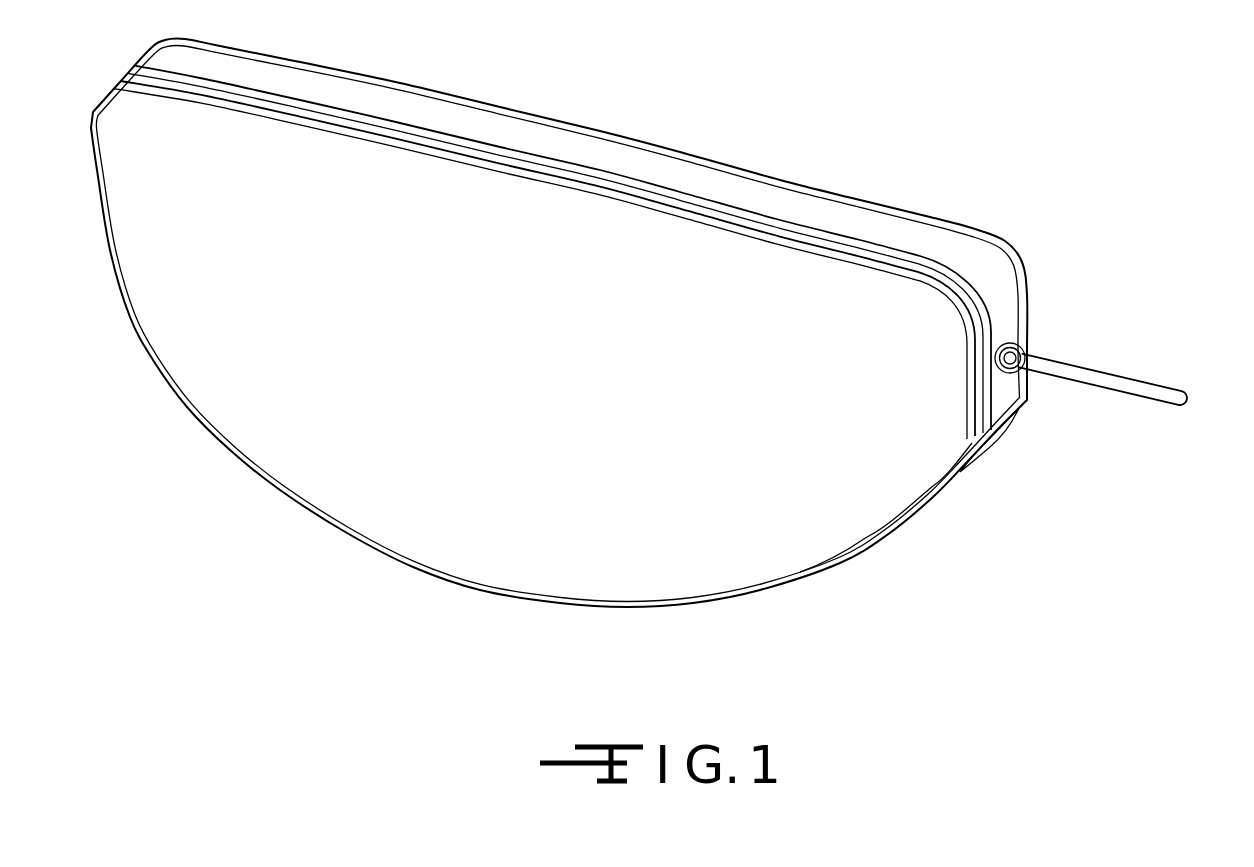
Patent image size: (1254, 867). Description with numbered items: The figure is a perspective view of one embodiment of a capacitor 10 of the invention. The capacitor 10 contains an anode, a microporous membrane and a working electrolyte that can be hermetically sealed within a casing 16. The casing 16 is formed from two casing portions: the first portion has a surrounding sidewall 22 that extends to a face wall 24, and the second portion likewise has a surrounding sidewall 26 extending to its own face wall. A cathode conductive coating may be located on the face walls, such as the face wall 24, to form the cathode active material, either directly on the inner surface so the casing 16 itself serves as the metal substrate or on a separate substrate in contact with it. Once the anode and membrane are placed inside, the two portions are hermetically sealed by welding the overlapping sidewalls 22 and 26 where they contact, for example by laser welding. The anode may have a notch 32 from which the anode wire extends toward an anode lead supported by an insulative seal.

The capacitor 10 is at (672, 307).
The casing 16 is at (782, 163).
The surrounding sidewall 22 is at (977, 382).
The face wall 24 is at (817, 507).
The surrounding sidewall 26 is at (908, 232).
The notch 32 is at (1160, 388).